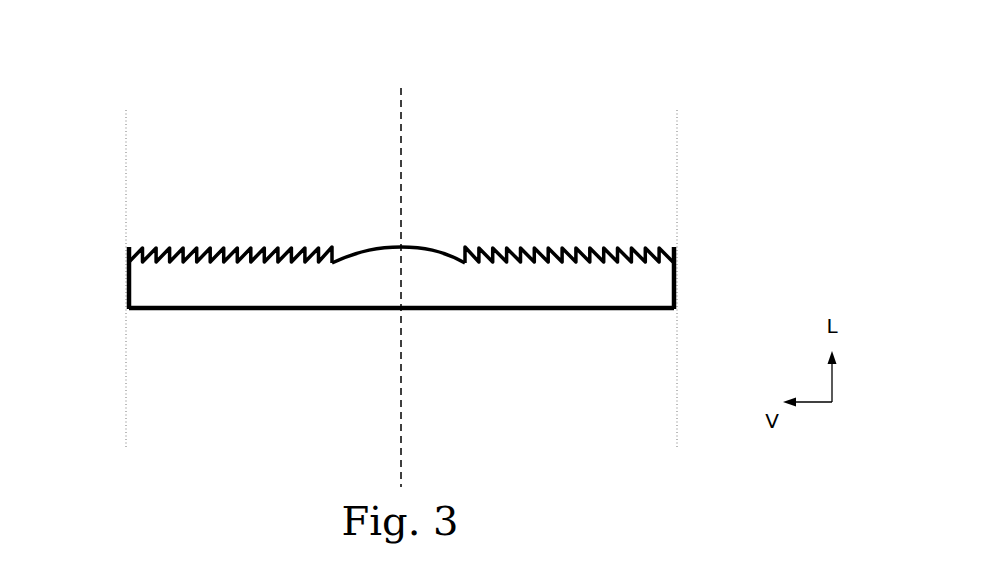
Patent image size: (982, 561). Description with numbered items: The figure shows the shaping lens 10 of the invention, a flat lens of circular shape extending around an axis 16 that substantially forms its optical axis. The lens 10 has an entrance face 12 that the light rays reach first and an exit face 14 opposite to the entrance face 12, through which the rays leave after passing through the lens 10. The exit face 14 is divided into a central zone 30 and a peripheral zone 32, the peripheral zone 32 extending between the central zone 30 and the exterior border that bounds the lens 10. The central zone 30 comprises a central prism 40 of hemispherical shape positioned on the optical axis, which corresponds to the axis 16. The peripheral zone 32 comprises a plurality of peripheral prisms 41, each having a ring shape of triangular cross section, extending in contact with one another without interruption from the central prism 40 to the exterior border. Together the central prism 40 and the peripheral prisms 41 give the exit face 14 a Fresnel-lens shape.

The shaping lens 10 is at (366, 247).
The entrance face 12 is at (293, 306).
The exit face 14 is at (365, 141).
The axis 16 is at (402, 350).
The central zone 30 is at (340, 141).
The peripheral zone 32 is at (160, 236).
The central prism 40 is at (384, 254).
The peripheral prism 41 is at (496, 245).